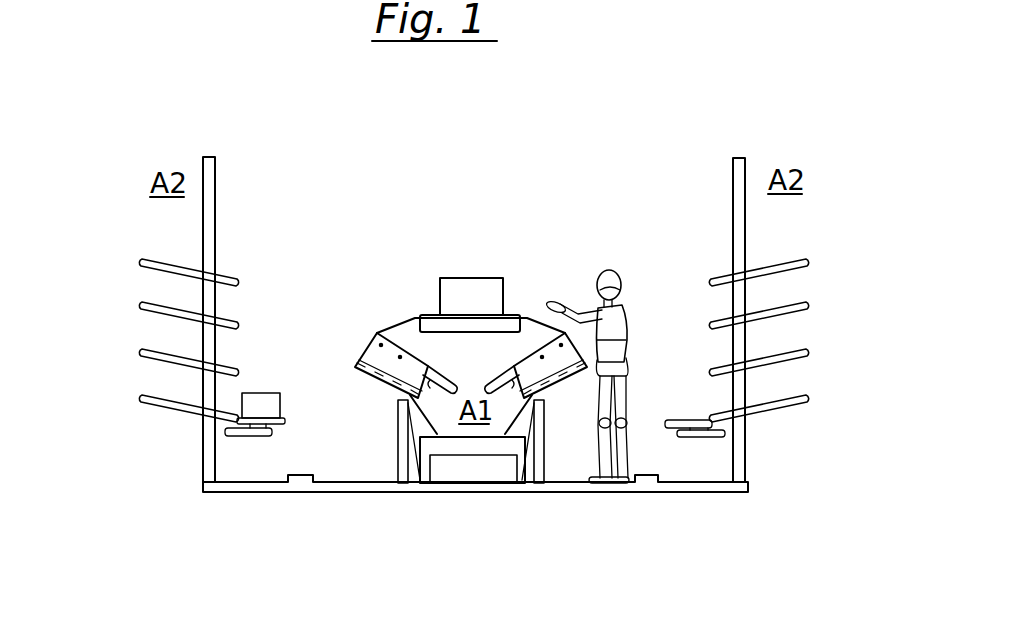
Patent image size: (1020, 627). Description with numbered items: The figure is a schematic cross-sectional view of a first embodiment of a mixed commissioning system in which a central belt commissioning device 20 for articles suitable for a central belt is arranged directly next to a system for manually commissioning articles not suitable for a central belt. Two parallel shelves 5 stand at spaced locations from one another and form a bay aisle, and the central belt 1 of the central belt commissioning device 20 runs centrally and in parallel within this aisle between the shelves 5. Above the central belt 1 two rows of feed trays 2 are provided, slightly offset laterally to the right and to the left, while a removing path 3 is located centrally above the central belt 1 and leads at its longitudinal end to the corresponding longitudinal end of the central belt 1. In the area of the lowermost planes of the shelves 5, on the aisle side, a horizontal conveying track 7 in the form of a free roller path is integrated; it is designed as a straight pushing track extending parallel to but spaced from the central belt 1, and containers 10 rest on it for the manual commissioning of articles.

The central belt 1 is at (477, 436).
The feed trays 2 is at (375, 333).
The removing path 3 is at (437, 323).
The shelves 5 is at (145, 262).
The horizontal conveying track 7 is at (283, 420).
The containers 10 is at (257, 403).
The central belt commissioning device 20 is at (539, 288).